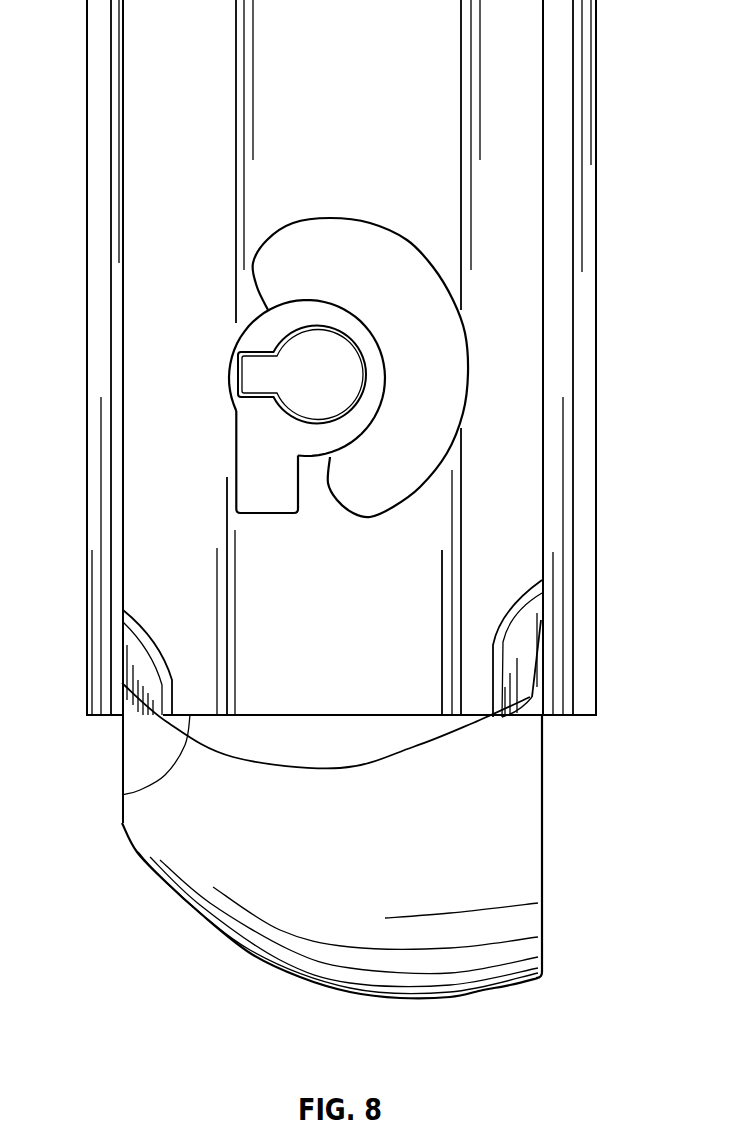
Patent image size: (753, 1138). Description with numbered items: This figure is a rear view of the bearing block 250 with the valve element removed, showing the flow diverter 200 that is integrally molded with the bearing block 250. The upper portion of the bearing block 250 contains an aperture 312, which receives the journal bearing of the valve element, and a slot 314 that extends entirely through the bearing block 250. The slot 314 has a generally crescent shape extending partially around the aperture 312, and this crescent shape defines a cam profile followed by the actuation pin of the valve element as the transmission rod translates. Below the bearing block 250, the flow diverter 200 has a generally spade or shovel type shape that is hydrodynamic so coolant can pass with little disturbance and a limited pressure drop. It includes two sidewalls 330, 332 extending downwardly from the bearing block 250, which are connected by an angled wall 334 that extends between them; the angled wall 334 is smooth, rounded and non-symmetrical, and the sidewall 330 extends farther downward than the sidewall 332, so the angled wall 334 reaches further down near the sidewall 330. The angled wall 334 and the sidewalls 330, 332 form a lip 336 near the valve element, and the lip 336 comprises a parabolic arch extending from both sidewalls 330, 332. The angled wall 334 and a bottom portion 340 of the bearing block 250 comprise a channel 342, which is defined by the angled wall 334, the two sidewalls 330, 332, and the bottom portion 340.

The bearing block 250 is at (362, 85).
The slot 314 is at (420, 340).
The aperture 312 is at (314, 372).
The sidewall 332 is at (122, 748).
The lip 336 is at (470, 732).
The channel 342 is at (346, 742).
The bottom portion 340 is at (122, 795).
The sidewall 330 is at (543, 843).
The angled wall 334 is at (400, 890).
The flow diverter 200 is at (527, 923).